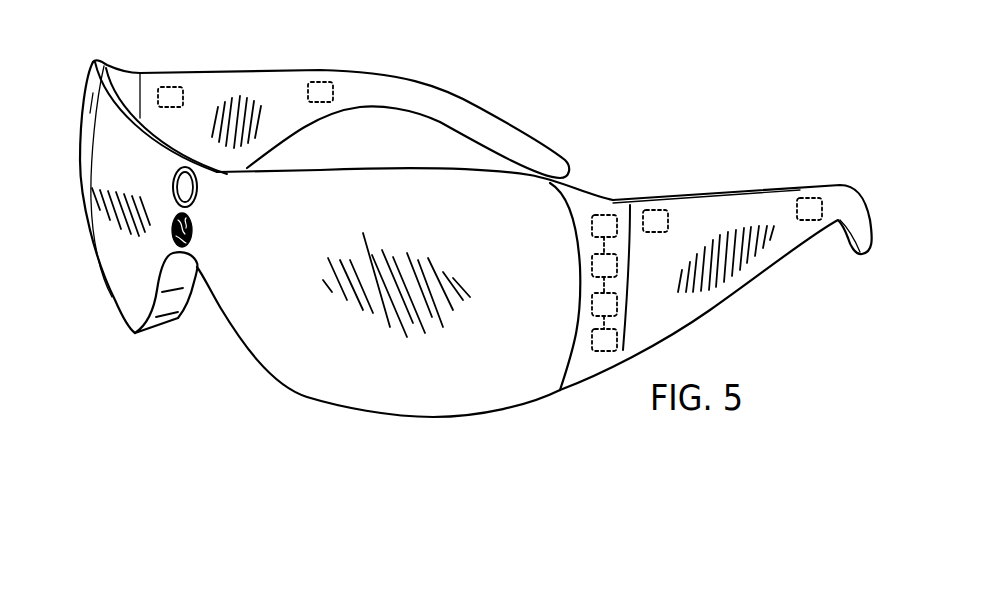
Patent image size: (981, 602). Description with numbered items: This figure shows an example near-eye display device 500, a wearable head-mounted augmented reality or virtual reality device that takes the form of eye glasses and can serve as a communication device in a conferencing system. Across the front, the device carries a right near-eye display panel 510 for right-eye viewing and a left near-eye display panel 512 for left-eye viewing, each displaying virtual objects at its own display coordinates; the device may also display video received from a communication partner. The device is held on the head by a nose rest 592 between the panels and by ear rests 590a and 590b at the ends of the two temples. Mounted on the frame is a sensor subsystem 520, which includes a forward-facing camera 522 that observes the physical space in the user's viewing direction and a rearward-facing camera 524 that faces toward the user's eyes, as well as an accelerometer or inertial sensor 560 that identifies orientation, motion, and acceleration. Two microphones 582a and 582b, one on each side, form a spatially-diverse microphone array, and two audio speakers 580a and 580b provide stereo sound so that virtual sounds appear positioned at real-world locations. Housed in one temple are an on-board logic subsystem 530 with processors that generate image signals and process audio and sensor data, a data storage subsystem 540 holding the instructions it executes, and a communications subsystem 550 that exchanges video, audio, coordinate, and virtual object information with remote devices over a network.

The near-eye display device 500 is at (506, 84).
The right near-eye display panel 510 is at (103, 243).
The left near-eye display panel 512 is at (338, 372).
The sensor subsystem 520 is at (624, 130).
The forward-facing camera 522 is at (206, 193).
The rearward-facing camera 524 is at (200, 238).
The logic subsystem 530 is at (605, 212).
The data storage subsystem 540 is at (615, 267).
The communications subsystem 550 is at (615, 303).
The accelerometer/inertial sensor 560 is at (613, 338).
The audio speaker 580a is at (321, 84).
The audio speaker 580b is at (813, 202).
The microphone 582a is at (175, 86).
The microphone 582b is at (655, 216).
The ear rest 590a is at (468, 126).
The ear rest 590b is at (837, 218).
The nose rest 592 is at (167, 303).